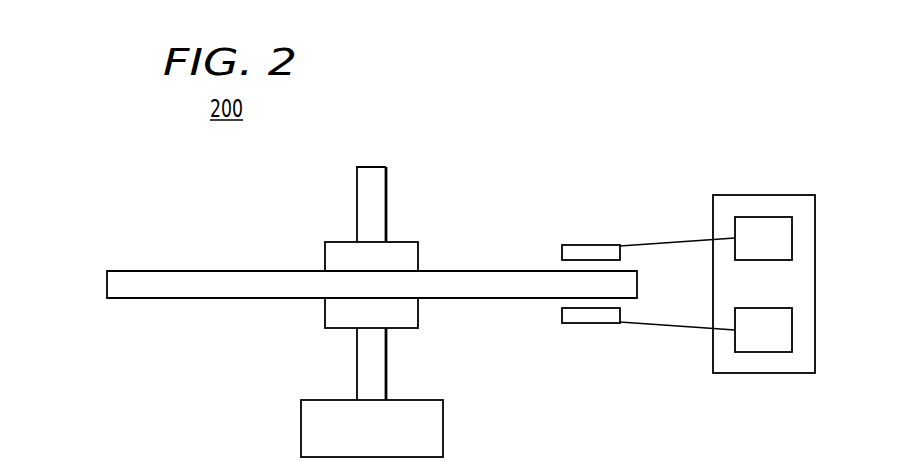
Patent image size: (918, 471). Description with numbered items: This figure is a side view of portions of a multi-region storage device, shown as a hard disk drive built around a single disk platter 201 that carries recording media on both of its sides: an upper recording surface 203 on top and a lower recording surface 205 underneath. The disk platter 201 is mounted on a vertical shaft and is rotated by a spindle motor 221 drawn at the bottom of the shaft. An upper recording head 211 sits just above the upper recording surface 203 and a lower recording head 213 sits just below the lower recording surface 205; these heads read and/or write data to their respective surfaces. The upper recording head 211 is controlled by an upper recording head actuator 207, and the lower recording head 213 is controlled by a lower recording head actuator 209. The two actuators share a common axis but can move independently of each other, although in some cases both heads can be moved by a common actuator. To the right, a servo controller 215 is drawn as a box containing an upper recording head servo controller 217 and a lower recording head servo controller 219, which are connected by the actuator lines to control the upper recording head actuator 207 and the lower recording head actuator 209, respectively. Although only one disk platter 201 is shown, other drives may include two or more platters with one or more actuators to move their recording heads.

The disk platter 201 is at (107, 283).
The upper recording surface 203 is at (177, 271).
The lower recording surface 205 is at (177, 298).
The upper recording head actuator 207 is at (672, 241).
The lower recording head actuator 209 is at (673, 331).
The upper recording head 211 is at (577, 245).
The lower recording head 213 is at (577, 323).
The servo controller 215 is at (758, 195).
The upper recording head servo controller 217 is at (779, 250).
The lower recording head servo controller 219 is at (779, 343).
The spindle motor 221 is at (443, 432).